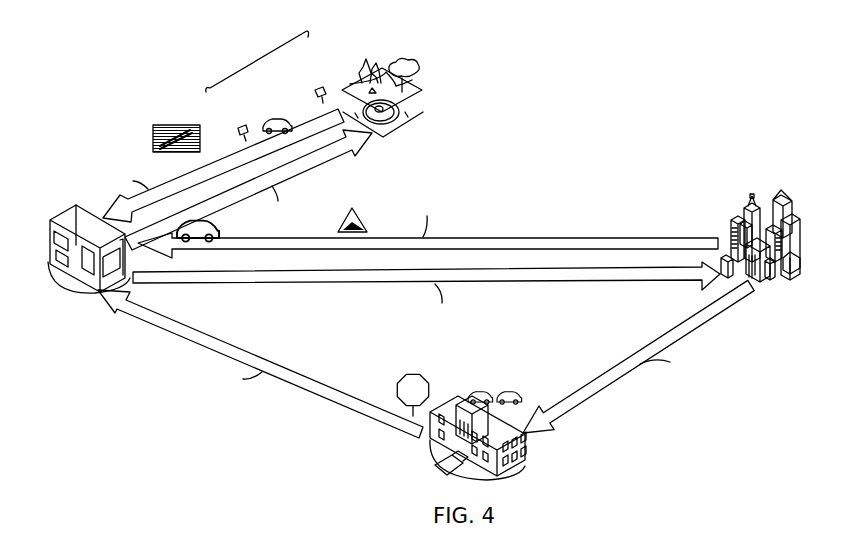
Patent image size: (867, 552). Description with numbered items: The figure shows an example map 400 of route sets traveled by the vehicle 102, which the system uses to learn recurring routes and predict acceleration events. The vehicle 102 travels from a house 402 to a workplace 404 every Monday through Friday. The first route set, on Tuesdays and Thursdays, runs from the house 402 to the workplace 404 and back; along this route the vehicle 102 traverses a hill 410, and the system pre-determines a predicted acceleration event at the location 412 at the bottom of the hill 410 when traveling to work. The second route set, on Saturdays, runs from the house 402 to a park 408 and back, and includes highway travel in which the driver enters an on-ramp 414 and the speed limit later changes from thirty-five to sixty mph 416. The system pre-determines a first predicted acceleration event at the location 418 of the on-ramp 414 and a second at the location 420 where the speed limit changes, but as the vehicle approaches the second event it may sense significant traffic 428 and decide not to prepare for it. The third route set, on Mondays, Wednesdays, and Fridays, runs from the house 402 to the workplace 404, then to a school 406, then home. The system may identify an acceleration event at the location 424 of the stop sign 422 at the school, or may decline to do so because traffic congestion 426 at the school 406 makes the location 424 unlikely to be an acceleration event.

The map 400 is at (70, 62).
The house 402 is at (50, 236).
The workplace 404 is at (802, 238).
The school 406 is at (527, 451).
The park 408 is at (381, 60).
The hill 410 is at (353, 209).
The location 412 is at (321, 223).
The on-ramp 414 is at (170, 123).
The speed limit change 416 is at (257, 61).
The location 418 is at (150, 165).
The location 420 is at (220, 140).
The stop sign 422 is at (430, 383).
The location 424 is at (411, 448).
The traffic congestion 426 is at (513, 379).
The traffic 428 is at (280, 113).
The vehicle 102 is at (217, 227).